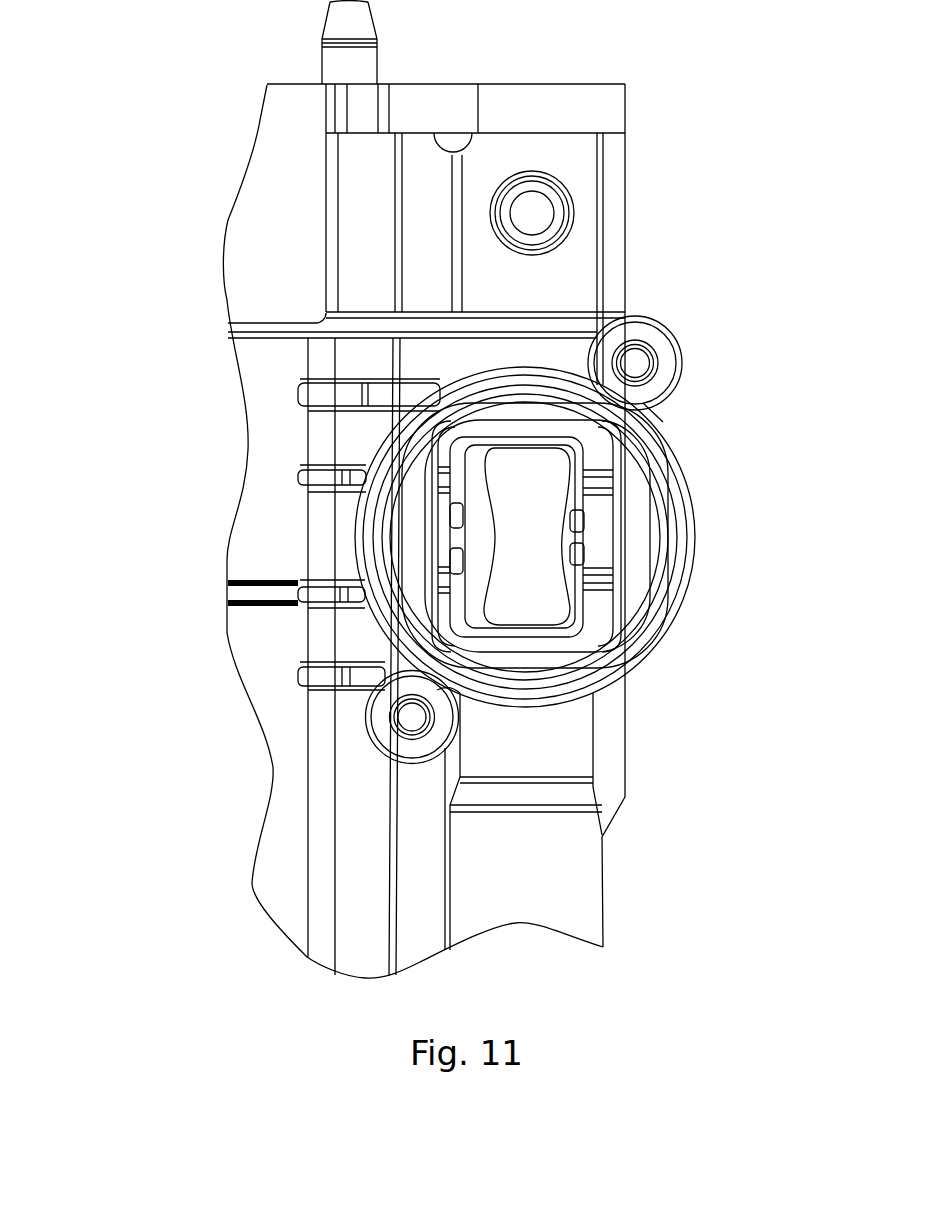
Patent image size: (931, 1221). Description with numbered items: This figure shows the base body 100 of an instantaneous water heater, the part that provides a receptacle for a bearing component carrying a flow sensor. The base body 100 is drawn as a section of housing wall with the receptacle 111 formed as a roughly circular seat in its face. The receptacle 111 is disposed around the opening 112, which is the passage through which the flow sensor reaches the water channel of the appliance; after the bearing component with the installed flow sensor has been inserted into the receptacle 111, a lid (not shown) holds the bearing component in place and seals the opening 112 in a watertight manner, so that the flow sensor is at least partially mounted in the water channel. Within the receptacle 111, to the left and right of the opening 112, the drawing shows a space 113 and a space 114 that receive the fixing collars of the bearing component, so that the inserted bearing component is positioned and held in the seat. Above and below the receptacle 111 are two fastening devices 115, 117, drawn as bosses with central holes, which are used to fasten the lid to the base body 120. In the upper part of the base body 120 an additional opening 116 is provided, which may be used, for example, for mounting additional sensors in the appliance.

The base body 100 is at (162, 220).
The receptacle 111 is at (600, 447).
The opening 112 is at (525, 595).
The space 113 is at (593, 520).
The space 114 is at (440, 537).
The fastening device 115 is at (408, 717).
The additional opening 116 is at (537, 212).
The fastening device 117 is at (638, 363).
The base body 120 is at (431, 413).